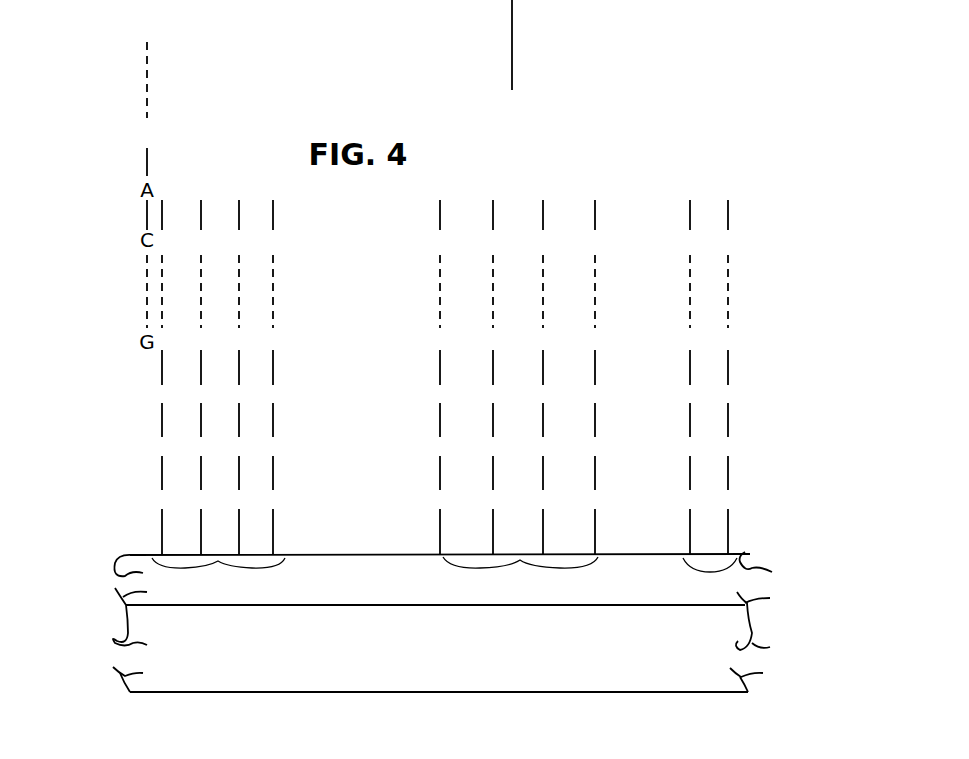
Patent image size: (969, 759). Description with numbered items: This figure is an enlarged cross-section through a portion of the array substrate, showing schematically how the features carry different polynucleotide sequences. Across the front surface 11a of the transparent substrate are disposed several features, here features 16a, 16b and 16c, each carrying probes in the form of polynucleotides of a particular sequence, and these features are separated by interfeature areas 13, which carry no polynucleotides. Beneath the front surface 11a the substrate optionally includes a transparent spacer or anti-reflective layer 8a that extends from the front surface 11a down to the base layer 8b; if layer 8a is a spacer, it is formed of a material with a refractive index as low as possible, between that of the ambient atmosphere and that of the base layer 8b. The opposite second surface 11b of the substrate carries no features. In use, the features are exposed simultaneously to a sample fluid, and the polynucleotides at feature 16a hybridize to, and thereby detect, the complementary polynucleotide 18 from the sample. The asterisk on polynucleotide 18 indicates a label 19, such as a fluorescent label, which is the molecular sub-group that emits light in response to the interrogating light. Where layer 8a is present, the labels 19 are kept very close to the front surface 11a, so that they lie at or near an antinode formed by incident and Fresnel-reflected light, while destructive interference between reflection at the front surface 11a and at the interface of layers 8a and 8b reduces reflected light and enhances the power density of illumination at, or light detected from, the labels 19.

The polynucleotide 18 is at (148, 77).
The label 19 is at (162, 133).
The feature 16a is at (218, 381).
The feature 16b is at (517, 381).
The feature 16c is at (704, 385).
The interfeature area 13 is at (370, 553).
The spacer or anti-reflective layer 8a is at (362, 580).
The base layer 8b is at (418, 663).
The front surface 11a is at (143, 553).
The second surface 11b is at (153, 700).